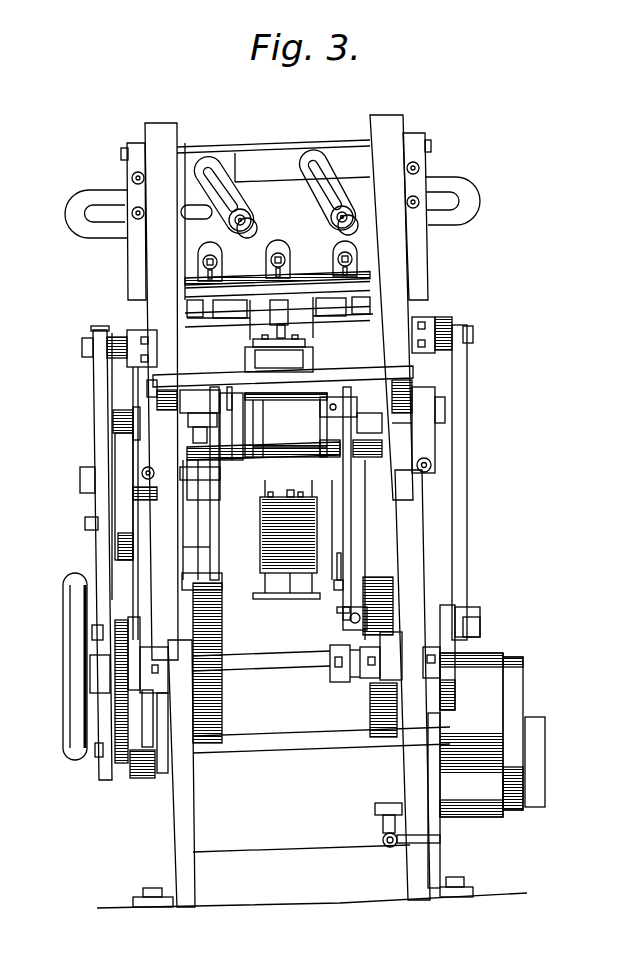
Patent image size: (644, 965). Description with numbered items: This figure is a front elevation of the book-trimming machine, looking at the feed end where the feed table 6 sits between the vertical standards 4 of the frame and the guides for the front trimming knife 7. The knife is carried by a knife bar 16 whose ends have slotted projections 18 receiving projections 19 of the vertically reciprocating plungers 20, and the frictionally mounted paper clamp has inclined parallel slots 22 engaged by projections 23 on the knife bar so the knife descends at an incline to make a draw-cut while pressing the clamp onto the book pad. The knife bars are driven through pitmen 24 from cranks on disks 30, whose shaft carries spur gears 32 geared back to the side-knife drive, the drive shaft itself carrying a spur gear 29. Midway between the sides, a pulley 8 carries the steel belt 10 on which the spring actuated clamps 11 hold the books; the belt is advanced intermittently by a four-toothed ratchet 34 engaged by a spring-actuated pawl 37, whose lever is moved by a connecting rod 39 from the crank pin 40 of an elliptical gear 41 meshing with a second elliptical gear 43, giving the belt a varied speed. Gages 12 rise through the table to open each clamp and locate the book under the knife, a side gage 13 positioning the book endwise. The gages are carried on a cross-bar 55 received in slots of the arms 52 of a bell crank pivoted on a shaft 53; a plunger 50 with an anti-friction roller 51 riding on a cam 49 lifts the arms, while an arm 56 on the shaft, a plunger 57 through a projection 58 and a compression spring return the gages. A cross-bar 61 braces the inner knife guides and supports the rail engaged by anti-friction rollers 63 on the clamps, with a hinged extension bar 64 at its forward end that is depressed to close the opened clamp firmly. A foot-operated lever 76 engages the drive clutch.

The vertical standard 4 is at (173, 812).
The feed table 6 is at (400, 372).
The trimming knife 7 is at (397, 263).
The pulley 8 is at (262, 512).
The steel belt 10 is at (275, 542).
The spring actuated clamp 11 is at (300, 596).
The gage 12 is at (280, 323).
The side gage 13 is at (367, 341).
The knife bar 16 is at (370, 283).
The projection 18 is at (70, 216).
The projection 19 is at (136, 218).
The plunger 20 is at (353, 522).
The parallel slot 22 is at (308, 163).
The projection 23 is at (330, 218).
The pitman 24 is at (103, 415).
The spur gear 29 is at (290, 670).
The disk 30 is at (133, 672).
The spur gear 32 is at (357, 628).
The ratchet 34 is at (123, 472).
The pawl 37 is at (115, 527).
The connecting rod 39 is at (103, 720).
The crank pin 40 is at (95, 757).
The elliptical gear 41 is at (120, 767).
The elliptical gear 43 is at (113, 655).
The cam 49 is at (343, 697).
The plunger 50 is at (338, 542).
The anti-friction roller 51 is at (342, 613).
The arm 52 is at (230, 413).
The shaft 53 is at (314, 470).
The cross-bar 55 is at (340, 433).
The arm 56 is at (340, 424).
The plunger 57 is at (335, 407).
The projection 58 is at (229, 398).
The cross-bar 61 is at (307, 317).
The anti-friction roller 63 is at (289, 340).
The extension bar 64 is at (277, 326).
The foot-operated lever 76 is at (383, 839).